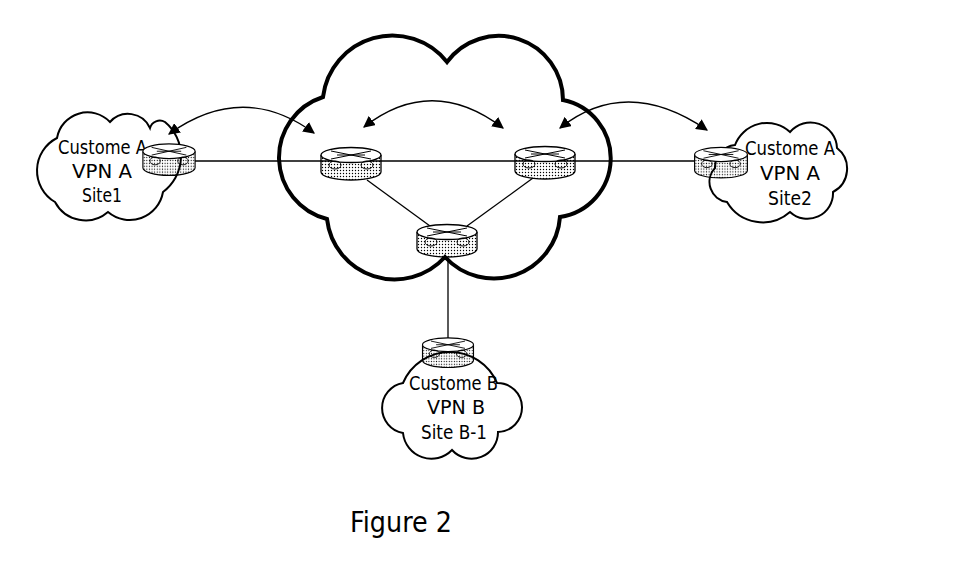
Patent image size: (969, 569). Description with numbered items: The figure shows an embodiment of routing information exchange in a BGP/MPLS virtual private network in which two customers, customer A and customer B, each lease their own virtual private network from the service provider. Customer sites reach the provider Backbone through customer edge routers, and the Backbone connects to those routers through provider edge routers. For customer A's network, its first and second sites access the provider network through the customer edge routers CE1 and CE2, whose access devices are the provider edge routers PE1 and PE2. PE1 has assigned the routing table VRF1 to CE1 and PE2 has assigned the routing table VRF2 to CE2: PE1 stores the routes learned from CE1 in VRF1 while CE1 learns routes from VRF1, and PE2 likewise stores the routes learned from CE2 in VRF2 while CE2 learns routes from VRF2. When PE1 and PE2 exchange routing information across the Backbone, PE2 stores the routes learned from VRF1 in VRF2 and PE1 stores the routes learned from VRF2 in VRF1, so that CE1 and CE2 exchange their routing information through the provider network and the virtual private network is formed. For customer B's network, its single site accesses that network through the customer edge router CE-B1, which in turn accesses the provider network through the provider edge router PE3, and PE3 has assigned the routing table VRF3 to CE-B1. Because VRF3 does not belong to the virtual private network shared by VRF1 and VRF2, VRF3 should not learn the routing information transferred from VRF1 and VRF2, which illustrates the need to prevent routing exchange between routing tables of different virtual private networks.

The customer edge router CE1 is at (169, 142).
The customer edge router CE2 is at (725, 145).
The customer edge router CE-B1 is at (480, 347).
The provider edge router PE1 is at (371, 151).
The provider edge router PE2 is at (516, 150).
The provider edge router PE3 is at (466, 245).
The VPN routing and forwarding table VRF1 is at (369, 146).
The VPN routing and forwarding table VRF2 is at (516, 148).
The VPN routing and forwarding table VRF3 is at (440, 245).
The backbone Backbone is at (445, 191).